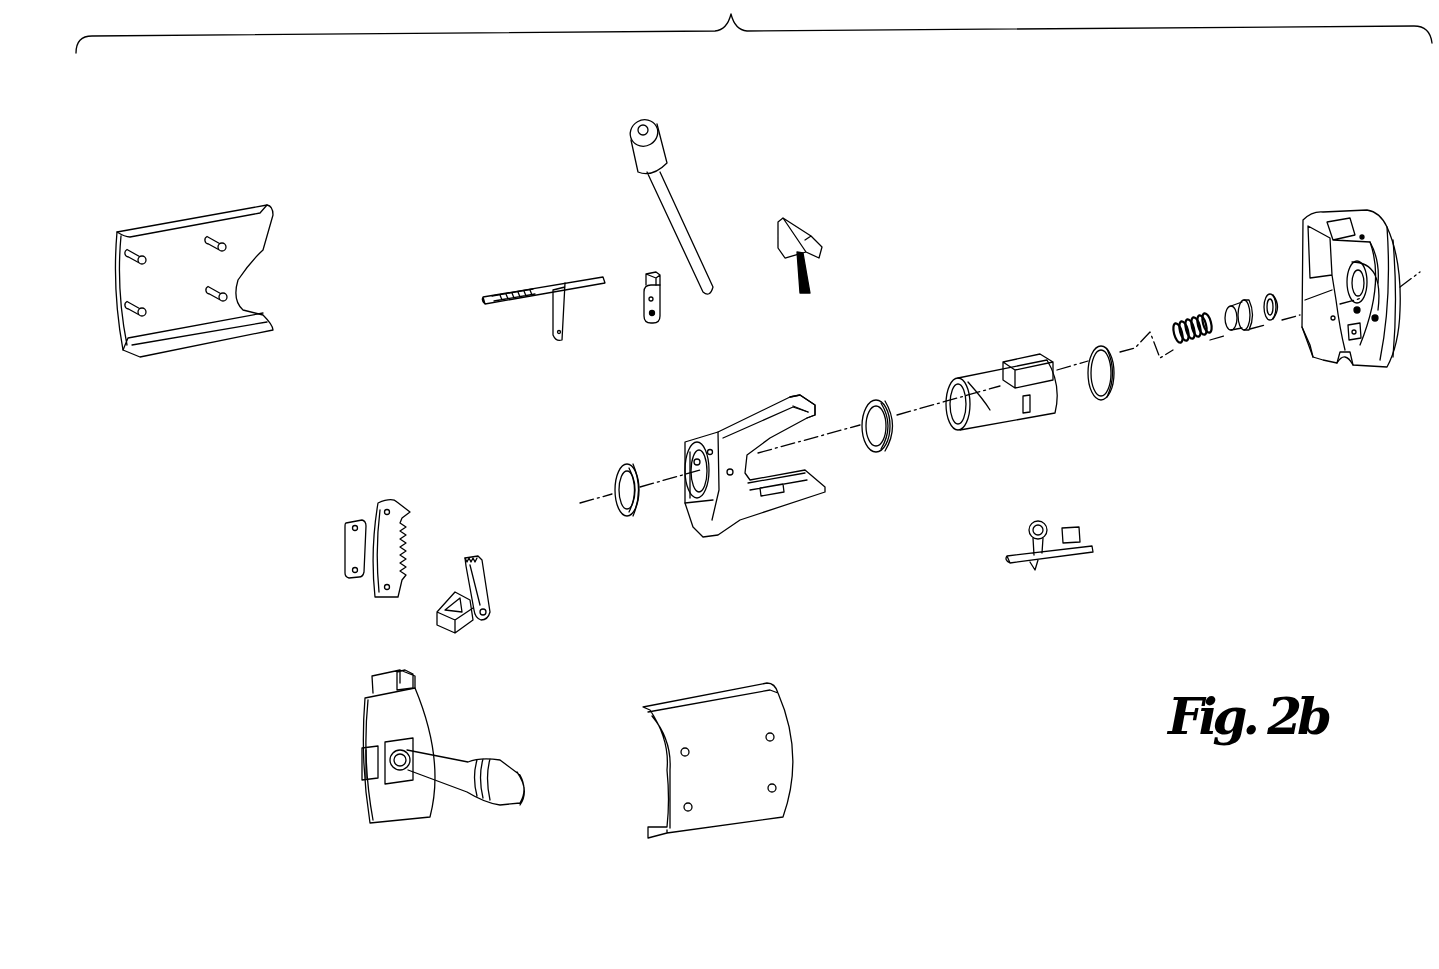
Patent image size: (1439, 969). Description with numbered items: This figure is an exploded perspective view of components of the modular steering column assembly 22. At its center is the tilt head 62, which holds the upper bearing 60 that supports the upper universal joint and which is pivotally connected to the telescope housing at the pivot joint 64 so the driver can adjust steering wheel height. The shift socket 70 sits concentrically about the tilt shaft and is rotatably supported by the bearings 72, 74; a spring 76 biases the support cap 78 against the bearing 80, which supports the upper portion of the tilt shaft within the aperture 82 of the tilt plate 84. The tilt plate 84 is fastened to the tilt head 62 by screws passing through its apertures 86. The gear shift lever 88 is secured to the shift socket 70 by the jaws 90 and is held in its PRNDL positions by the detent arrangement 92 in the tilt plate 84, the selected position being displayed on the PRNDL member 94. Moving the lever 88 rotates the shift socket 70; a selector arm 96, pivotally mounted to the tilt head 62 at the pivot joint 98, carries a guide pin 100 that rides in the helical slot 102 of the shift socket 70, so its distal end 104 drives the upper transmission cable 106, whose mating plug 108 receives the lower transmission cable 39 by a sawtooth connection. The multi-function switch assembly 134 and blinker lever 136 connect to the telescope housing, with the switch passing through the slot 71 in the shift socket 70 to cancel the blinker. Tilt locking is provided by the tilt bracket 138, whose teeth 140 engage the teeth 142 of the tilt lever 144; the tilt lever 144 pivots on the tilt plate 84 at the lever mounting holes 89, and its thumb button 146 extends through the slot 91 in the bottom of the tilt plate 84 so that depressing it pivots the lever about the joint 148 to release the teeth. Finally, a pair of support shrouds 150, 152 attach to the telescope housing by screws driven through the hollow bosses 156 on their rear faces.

The steering column assembly 22 is at (1118, 195).
The lower transmission cable 39 is at (524, 280).
The upper bearing 60 is at (618, 465).
The tilt head 62 is at (837, 442).
The pivot joint 64 is at (731, 475).
The shift socket 70 is at (1011, 396).
The slot 71 is at (1028, 405).
The bearing 72 is at (875, 398).
The bearing 74 is at (1095, 353).
The spring 76 is at (1178, 320).
The support cap 78 is at (1233, 305).
The bearing 80 is at (1273, 293).
The aperture 82 is at (1335, 296).
The tilt plate 84 is at (1322, 285).
The apertures 86 is at (1392, 357).
The gear shift lever 88 is at (678, 208).
The lever mounting holes 89 is at (1347, 360).
The jaws 90 is at (828, 493).
The slot 91 is at (1348, 340).
The detent arrangement 92 is at (1353, 287).
The PRNDL member 94 is at (802, 232).
The selector arm 96 is at (665, 307).
The pivot joint 98 is at (655, 320).
The guide pin 100 is at (655, 302).
The helical slot 102 is at (972, 382).
The distal end 104 is at (642, 275).
The upper transmission cable 106 is at (582, 277).
The mating plug 108 is at (527, 290).
The multi-function switch assembly 134 is at (402, 760).
The blinker lever 136 is at (453, 792).
The tilt bracket 138 is at (368, 588).
The teeth 140 is at (408, 527).
The teeth 142 is at (467, 560).
The tilt lever 144 is at (497, 588).
The thumb button 146 is at (457, 630).
The joint 148 is at (490, 615).
The support shroud 150 is at (194, 309).
The support shroud 152 is at (780, 820).
The hollow bosses 156 is at (146, 316).